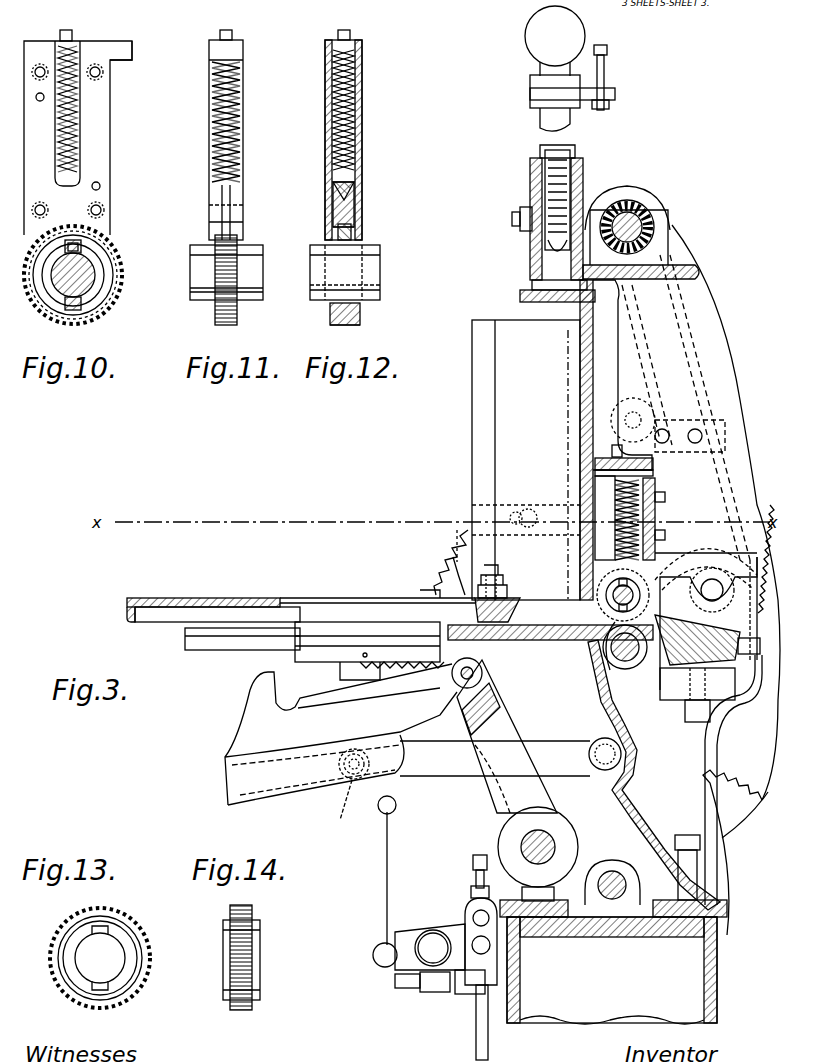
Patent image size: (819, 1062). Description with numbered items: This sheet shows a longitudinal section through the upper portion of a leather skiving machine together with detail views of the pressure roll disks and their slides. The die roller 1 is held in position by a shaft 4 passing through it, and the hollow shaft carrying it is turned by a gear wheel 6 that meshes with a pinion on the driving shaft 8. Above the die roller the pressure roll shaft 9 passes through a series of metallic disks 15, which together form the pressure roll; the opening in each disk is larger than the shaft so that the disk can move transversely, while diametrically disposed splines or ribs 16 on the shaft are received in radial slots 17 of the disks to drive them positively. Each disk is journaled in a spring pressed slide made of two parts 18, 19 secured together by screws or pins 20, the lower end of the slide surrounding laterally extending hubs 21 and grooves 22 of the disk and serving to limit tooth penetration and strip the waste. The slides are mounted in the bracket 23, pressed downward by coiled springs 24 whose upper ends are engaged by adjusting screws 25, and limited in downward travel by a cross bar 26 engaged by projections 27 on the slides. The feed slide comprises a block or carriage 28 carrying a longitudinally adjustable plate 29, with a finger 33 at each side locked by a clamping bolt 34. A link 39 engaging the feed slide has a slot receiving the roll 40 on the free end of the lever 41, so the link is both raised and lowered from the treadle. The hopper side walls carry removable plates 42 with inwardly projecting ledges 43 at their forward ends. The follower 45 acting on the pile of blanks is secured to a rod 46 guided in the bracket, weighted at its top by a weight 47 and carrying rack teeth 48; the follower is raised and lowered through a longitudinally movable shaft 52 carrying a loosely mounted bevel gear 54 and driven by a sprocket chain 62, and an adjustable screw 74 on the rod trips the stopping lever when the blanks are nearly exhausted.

In FIG. 3, the die roller 1 is at (655, 665).
In FIG. 3, the shaft 4 is at (598, 690).
In FIG. 3, the gear wheel 6 is at (583, 562).
In FIG. 3, the driving shaft 8 is at (613, 880).
In FIG. 3, the pressure roll shaft 9 is at (606, 597).
In FIG. 10, the metallic disks 15 is at (122, 270).
In FIG. 11, the metallic disks 15 is at (220, 300).
In FIG. 12, the metallic disks 15 is at (330, 322).
In FIG. 13, the metallic disks 15 is at (130, 947).
In FIG. 14, the metallic disks 15 is at (246, 955).
In FIG. 3, the metallic disks 15 is at (610, 668).
In FIG. 10, the splines or ribs 16 is at (78, 248).
In FIG. 11, the splines or ribs 16 is at (240, 250).
In FIG. 12, the splines or ribs 16 is at (380, 248).
In FIG. 10, the radial slots 17 is at (73, 245).
In FIG. 12, the radial slots 17 is at (338, 238).
In FIG. 13, the radial slots 17 is at (103, 928).
In FIG. 10, the slide part 18 is at (103, 162).
In FIG. 12, the slide part 18 is at (327, 190).
In FIG. 3, the slide part 18 is at (608, 535).
In FIG. 12, the slide part 19 is at (363, 188).
In FIG. 10, the screws or pins 20 is at (101, 74).
In FIG. 11, the screws or pins 20 is at (236, 212).
In FIG. 3, the screws or pins 20 is at (655, 490).
In FIG. 12, the hubs 21 is at (362, 236).
In FIG. 13, the hubs 21 is at (140, 950).
In FIG. 14, the hubs 21 is at (252, 925).
In FIG. 12, the grooves 22 is at (360, 312).
In FIG. 13, the grooves 22 is at (145, 955).
In FIG. 3, the bracket 23 is at (714, 310).
In FIG. 10, the coiled springs 24 is at (67, 109).
In FIG. 11, the coiled springs 24 is at (244, 110).
In FIG. 12, the coiled springs 24 is at (363, 110).
In FIG. 3, the coiled springs 24 is at (612, 498).
In FIG. 10, the adjusting screws 25 is at (72, 35).
In FIG. 11, the adjusting screws 25 is at (232, 34).
In FIG. 12, the adjusting screws 25 is at (350, 34).
In FIG. 3, the adjusting screws 25 is at (620, 445).
In FIG. 3, the cross bar 26 is at (688, 512).
In FIG. 10, the projections 27 is at (133, 45).
In FIG. 11, the projections 27 is at (243, 52).
In FIG. 3, the projections 27 is at (655, 482).
In FIG. 3, the block or carriage 28 is at (325, 662).
In FIG. 3, the plate 29 is at (348, 628).
In FIG. 3, the finger 33 is at (520, 610).
In FIG. 3, the clamping bolt 34 is at (445, 600).
In FIG. 3, the link 39 is at (248, 725).
In FIG. 3, the roll 40 is at (355, 780).
In FIG. 3, the lever 41 is at (462, 770).
In FIG. 3, the removable plates 42 is at (515, 422).
In FIG. 3, the ledges 43 is at (578, 365).
In FIG. 3, the follower 45 is at (528, 300).
In FIG. 3, the rod 46 is at (570, 150).
In FIG. 3, the weight 47 is at (577, 36).
In FIG. 3, the rack teeth 48 is at (550, 152).
In FIG. 3, the longitudinally movable shaft 52 is at (662, 222).
In FIG. 3, the bevel gear 54 is at (640, 205).
In FIG. 3, the sprocket chain 62 is at (700, 385).
In FIG. 3, the adjustable screw 74 is at (608, 108).